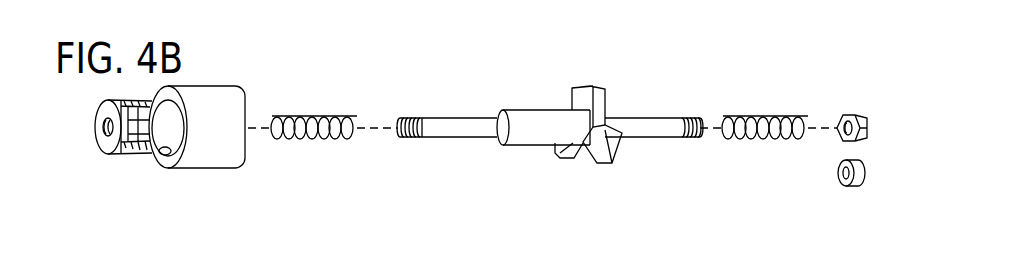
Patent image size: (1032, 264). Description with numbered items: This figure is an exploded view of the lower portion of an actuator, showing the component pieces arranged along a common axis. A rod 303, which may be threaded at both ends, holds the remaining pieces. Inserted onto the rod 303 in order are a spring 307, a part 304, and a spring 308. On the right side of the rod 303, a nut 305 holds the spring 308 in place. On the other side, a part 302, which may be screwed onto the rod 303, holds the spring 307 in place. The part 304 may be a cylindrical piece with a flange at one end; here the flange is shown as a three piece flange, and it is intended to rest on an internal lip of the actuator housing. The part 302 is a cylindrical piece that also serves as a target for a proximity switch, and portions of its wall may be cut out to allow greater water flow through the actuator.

The part 302 is at (203, 173).
The rod 303 is at (455, 142).
The part 304 is at (607, 165).
The nut 305 is at (842, 113).
The spring 307 is at (338, 137).
The spring 308 is at (753, 142).